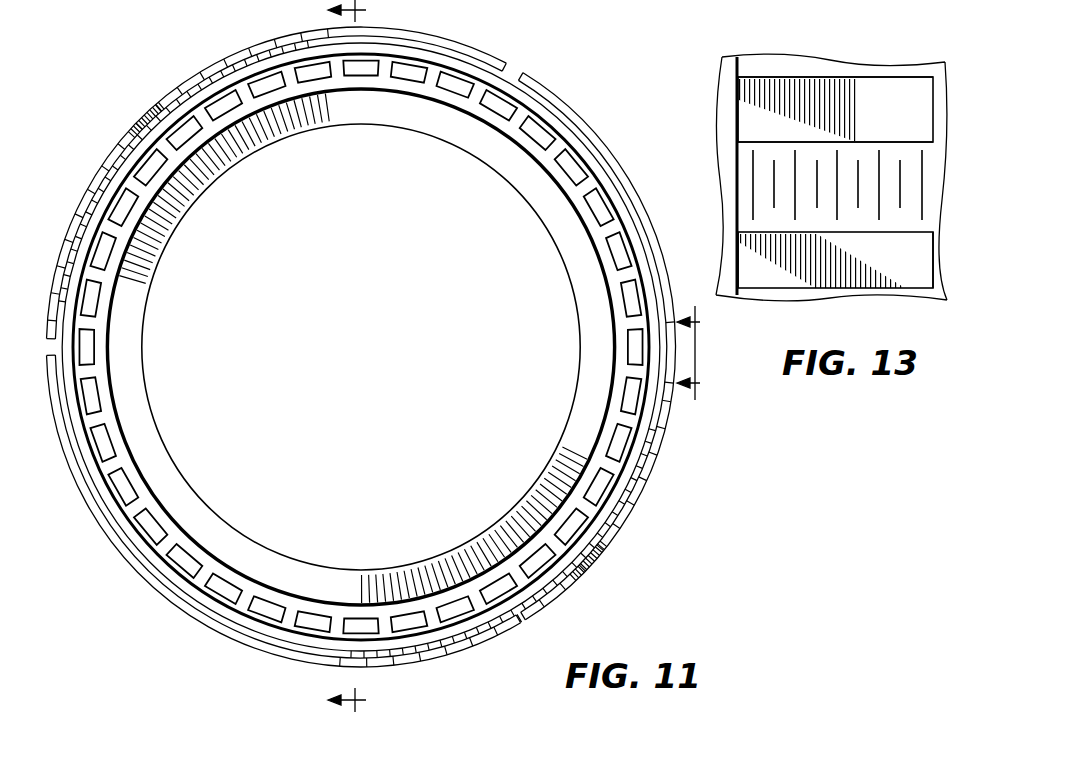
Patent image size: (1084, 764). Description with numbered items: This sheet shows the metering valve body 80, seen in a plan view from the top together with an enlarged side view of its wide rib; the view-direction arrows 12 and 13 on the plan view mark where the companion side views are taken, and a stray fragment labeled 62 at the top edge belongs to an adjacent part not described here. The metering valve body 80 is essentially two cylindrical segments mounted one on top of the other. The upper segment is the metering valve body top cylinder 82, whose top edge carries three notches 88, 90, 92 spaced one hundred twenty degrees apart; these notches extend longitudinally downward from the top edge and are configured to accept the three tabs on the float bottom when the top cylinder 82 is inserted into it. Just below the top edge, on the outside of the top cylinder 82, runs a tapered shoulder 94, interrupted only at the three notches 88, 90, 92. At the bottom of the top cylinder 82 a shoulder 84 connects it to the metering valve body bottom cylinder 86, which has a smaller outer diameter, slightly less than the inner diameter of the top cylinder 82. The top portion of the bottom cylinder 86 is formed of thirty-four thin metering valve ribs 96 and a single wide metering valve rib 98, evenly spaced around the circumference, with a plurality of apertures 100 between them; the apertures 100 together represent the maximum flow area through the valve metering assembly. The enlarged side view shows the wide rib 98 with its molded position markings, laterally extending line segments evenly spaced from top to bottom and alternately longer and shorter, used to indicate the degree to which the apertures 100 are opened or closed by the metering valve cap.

In FIG. 11, the section line 12- 12 is at (363, 358).
In FIG. 11, the section line 13- 13 is at (698, 353).
In FIG. 13, the housing element 62 is at (773, 0).
In FIG. 11, the metering valve body 80 is at (577, 106).
In FIG. 13, the metering valve body 80 is at (872, 57).
In FIG. 13, the metering valve body top cylinder 82 is at (722, 115).
In FIG. 13, the shoulder 84 is at (738, 266).
In FIG. 13, the metering valve body bottom cylinder 86 is at (933, 180).
In FIG. 11, the notch 88 is at (58, 346).
In FIG. 11, the notch 90 is at (514, 623).
In FIG. 11, the notch 92 is at (515, 84).
In FIG. 11, the tapered shoulder 94 is at (149, 92).
In FIG. 11, the thin metering valve ribs 96 is at (598, 565).
In FIG. 13, the thin metering valve ribs 96 is at (843, 79).
In FIG. 11, the wide metering valve rib 98 is at (640, 347).
In FIG. 13, the wide metering valve rib 98 is at (853, 150).
In FIG. 11, the apertures 100 is at (557, 582).
In FIG. 13, the apertures 100 is at (916, 95).